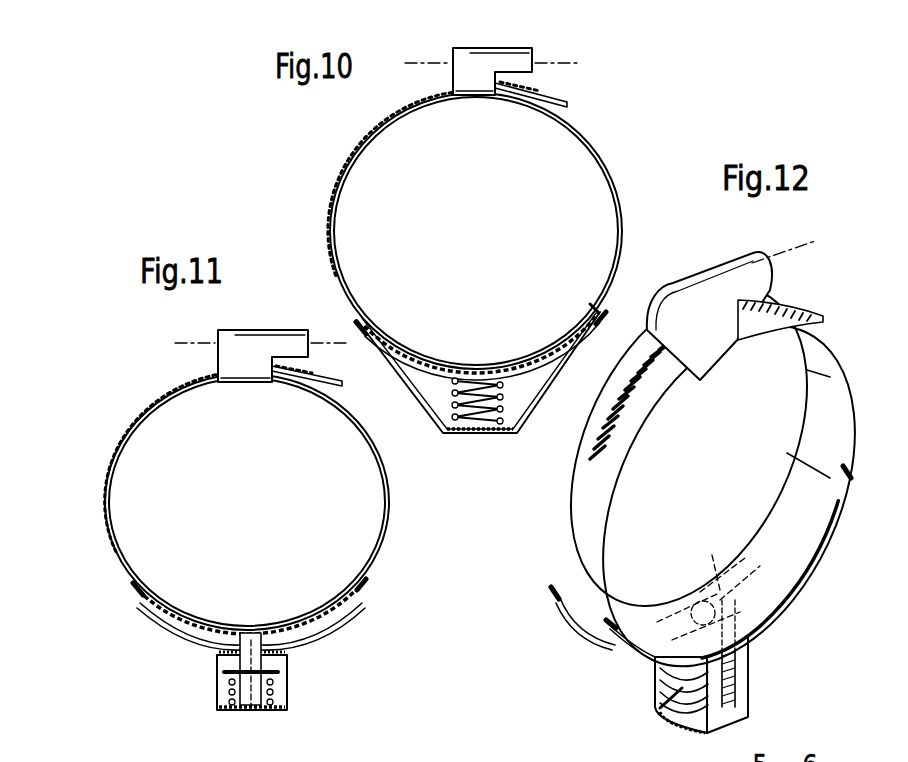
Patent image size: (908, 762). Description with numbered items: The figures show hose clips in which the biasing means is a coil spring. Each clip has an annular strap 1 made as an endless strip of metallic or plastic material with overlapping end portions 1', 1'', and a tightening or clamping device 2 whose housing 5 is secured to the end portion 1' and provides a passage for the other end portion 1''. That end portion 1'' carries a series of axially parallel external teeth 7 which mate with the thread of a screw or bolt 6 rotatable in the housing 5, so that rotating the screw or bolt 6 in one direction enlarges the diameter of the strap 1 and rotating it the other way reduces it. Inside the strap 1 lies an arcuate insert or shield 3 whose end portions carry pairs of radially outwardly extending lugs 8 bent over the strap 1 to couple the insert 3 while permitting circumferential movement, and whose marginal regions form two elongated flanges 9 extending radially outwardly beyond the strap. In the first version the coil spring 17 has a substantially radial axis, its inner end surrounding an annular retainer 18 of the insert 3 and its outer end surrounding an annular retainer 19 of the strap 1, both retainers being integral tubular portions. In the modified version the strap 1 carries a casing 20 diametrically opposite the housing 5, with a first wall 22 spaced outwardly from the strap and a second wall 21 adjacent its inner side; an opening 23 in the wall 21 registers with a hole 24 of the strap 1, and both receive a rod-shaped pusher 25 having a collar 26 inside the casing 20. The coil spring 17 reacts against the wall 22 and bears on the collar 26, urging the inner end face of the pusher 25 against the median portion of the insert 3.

In FIG. 10, the strap 1 is at (476, 231).
In FIG. 11, the strap 1 is at (247, 502).
In FIG. 12, the strap 1 is at (714, 477).
In FIG. 10, the end portion of the strap 1' is at (531, 121).
In FIG. 11, the end portion of the strap 1' is at (307, 396).
In FIG. 12, the end portion of the strap 1' is at (780, 344).
In FIG. 10, the other end portion of the strap 1'' is at (398, 142).
In FIG. 11, the other end portion of the strap 1'' is at (170, 412).
In FIG. 12, the other end portion of the strap 1'' is at (669, 444).
In FIG. 10, the tightening or clamping device 2 is at (424, 78).
In FIG. 11, the tightening or clamping device 2 is at (198, 358).
In FIG. 12, the tightening or clamping device 2 is at (793, 280).
In FIG. 10, the insert or shield 3 is at (423, 346).
In FIG. 11, the insert or shield 3 is at (190, 606).
In FIG. 12, the insert or shield 3 is at (645, 598).
In FIG. 10, the housing 5 is at (490, 47).
In FIG. 11, the housing 5 is at (243, 330).
In FIG. 12, the housing 5 is at (699, 273).
In FIG. 10, the screw or bolt 6 is at (577, 63).
In FIG. 11, the screw or bolt 6 is at (332, 343).
In FIG. 12, the screw or bolt 6 is at (803, 255).
In FIG. 10, the teeth 7 is at (381, 119).
In FIG. 11, the teeth 7 is at (127, 425).
In FIG. 12, the teeth 7 is at (597, 429).
In FIG. 10, the projections or lugs 8 is at (598, 316).
In FIG. 11, the projections or lugs 8 is at (141, 605).
In FIG. 12, the projections or lugs 8 is at (599, 312).
In FIG. 10, the flanges 9 is at (537, 376).
In FIG. 11, the flanges 9 is at (334, 635).
In FIG. 12, the flanges 9 is at (580, 628).
In FIG. 10, the coil spring 17 is at (447, 407).
In FIG. 11, the coil spring 17 is at (232, 700).
In FIG. 12, the coil spring 17 is at (668, 708).
In FIG. 10, the annular retainer of the insert 18 is at (477, 372).
In FIG. 10, the annular retainer of the strap 19 is at (472, 426).
In FIG. 11, the housing or casing 20 is at (294, 701).
In FIG. 12, the housing or casing 20 is at (759, 687).
In FIG. 11, the second wall 21 is at (266, 645).
In FIG. 12, the second wall 21 is at (734, 612).
In FIG. 11, the first wall 22 is at (277, 712).
In FIG. 12, the first wall 22 is at (685, 724).
In FIG. 11, the opening 23 is at (238, 645).
In FIG. 12, the opening 23 is at (750, 643).
In FIG. 11, the opening or hole of the strap 24 is at (266, 661).
In FIG. 11, the pusher 25 is at (250, 697).
In FIG. 12, the pusher 25 is at (719, 578).
In FIG. 11, the abutment or collar 26 is at (232, 672).
In FIG. 12, the abutment or collar 26 is at (677, 680).